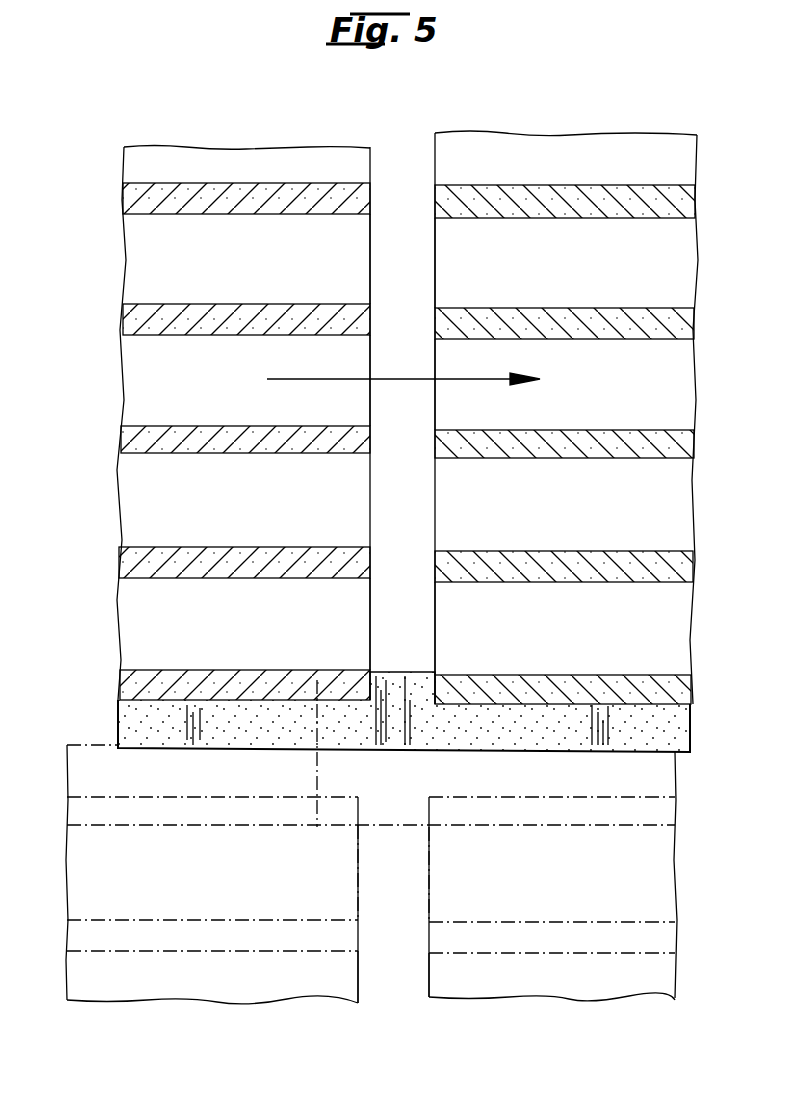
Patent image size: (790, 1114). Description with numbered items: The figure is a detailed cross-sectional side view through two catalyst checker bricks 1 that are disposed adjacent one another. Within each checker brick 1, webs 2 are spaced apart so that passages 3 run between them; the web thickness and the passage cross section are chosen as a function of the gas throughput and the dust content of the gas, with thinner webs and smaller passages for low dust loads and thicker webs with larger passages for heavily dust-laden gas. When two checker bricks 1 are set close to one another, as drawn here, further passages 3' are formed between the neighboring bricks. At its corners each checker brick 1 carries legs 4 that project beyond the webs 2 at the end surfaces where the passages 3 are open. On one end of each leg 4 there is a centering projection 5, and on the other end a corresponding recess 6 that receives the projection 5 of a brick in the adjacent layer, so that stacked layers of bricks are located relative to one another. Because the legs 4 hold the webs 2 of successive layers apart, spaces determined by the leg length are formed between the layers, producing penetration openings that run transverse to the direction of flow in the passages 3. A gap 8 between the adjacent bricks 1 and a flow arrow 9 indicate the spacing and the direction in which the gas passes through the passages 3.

The checker brick 1 is at (152, 170).
The web 2 is at (166, 322).
The passage 3 is at (388, 505).
The passage between neighboring checker bricks 3' is at (406, 839).
The leg 4 is at (263, 710).
The centering projection 5 is at (304, 706).
The recess 6 is at (310, 690).
The gap 8 is at (407, 278).
The flow direction 9 is at (400, 379).